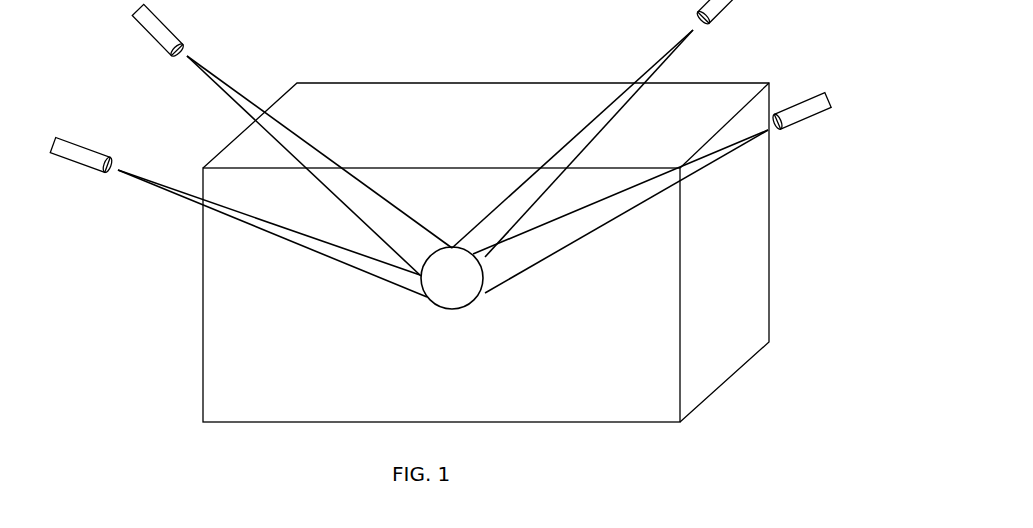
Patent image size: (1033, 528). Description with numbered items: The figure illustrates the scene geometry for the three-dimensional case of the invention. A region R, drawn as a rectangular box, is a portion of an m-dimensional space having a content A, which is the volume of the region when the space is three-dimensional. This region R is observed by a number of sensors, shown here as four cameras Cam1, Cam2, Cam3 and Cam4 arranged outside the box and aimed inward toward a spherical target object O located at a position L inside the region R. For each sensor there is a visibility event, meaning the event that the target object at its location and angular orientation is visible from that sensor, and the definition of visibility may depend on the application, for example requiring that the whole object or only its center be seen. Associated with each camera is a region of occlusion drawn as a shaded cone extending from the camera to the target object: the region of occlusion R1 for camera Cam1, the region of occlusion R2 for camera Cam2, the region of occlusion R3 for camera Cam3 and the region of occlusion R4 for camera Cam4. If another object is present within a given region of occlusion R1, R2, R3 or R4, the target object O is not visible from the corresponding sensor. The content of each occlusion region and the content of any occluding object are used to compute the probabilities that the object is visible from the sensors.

The region R is at (486, 252).
The sensor Cam1 is at (197, 35).
The sensor Cam2 is at (736, 24).
The sensor Cam3 is at (804, 130).
The sensor Cam4 is at (83, 170).
The region of occlusion R1 is at (319, 166).
The region of occlusion R2 is at (572, 143).
The region of occlusion R3 is at (620, 211).
The region of occlusion R4 is at (272, 233).